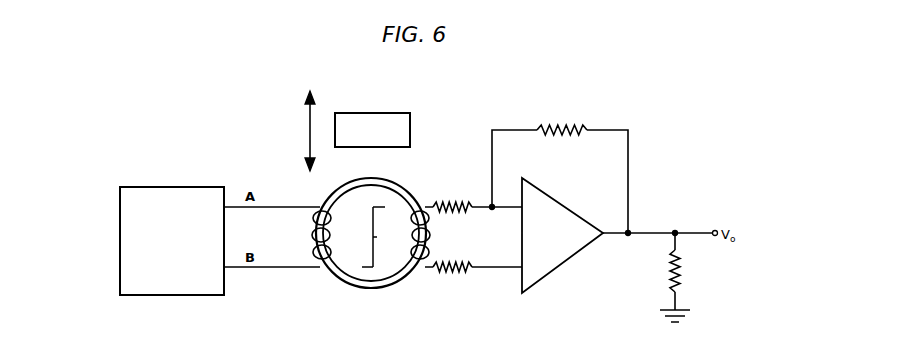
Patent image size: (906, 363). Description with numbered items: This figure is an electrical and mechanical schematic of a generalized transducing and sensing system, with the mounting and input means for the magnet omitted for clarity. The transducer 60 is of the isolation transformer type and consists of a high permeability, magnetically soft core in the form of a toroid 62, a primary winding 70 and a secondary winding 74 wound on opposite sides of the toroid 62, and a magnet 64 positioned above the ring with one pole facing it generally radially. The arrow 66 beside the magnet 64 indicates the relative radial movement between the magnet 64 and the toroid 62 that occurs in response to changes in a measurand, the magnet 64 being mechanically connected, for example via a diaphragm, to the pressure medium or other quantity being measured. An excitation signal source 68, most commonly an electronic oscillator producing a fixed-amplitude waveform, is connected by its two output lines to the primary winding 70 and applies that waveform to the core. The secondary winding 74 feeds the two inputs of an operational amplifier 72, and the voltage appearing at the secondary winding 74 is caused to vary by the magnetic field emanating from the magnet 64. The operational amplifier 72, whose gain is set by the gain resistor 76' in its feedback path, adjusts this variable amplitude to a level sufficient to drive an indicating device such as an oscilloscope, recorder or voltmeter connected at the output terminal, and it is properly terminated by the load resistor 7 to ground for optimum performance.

The load resistor 7 is at (684, 275).
The transducer 60 is at (339, 292).
The toroid core 62 is at (371, 291).
The magnet 64 is at (413, 129).
The arrow 66 is at (309, 133).
The excitation signal source 68 is at (186, 186).
The primary winding 70 is at (316, 273).
The operational amplifier 72 is at (557, 272).
The secondary winding 74 is at (430, 276).
The gain resistor 76' is at (560, 166).